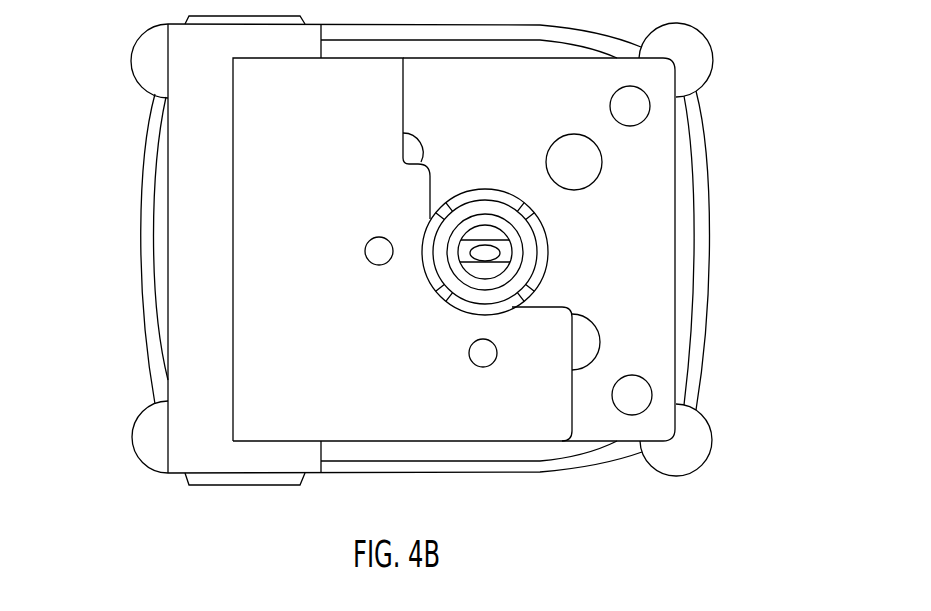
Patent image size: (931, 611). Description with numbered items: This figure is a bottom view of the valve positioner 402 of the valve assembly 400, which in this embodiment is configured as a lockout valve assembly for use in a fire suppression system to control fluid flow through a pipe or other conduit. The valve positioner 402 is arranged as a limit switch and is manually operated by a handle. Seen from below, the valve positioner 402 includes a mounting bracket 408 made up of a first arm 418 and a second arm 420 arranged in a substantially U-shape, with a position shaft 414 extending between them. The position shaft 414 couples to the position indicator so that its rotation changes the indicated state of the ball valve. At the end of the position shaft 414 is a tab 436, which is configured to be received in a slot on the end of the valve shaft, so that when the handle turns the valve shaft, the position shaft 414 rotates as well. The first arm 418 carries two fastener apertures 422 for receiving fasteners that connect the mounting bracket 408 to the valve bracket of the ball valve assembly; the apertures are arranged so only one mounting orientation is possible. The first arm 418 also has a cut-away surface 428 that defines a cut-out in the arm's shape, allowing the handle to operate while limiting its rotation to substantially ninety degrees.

The valve assembly 400 is at (775, 153).
The valve positioner 402 is at (132, 202).
The mounting bracket 408 is at (233, 337).
The position shaft 414 is at (486, 232).
The first arm 418 is at (510, 425).
The second arm 420 is at (648, 269).
The fastener apertures 422 is at (372, 247).
The cut-away surface 428 is at (403, 113).
The tab 436 is at (507, 253).